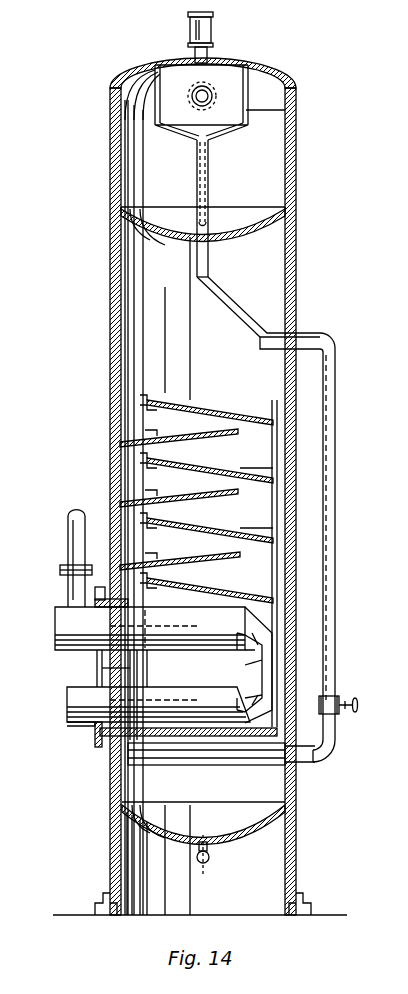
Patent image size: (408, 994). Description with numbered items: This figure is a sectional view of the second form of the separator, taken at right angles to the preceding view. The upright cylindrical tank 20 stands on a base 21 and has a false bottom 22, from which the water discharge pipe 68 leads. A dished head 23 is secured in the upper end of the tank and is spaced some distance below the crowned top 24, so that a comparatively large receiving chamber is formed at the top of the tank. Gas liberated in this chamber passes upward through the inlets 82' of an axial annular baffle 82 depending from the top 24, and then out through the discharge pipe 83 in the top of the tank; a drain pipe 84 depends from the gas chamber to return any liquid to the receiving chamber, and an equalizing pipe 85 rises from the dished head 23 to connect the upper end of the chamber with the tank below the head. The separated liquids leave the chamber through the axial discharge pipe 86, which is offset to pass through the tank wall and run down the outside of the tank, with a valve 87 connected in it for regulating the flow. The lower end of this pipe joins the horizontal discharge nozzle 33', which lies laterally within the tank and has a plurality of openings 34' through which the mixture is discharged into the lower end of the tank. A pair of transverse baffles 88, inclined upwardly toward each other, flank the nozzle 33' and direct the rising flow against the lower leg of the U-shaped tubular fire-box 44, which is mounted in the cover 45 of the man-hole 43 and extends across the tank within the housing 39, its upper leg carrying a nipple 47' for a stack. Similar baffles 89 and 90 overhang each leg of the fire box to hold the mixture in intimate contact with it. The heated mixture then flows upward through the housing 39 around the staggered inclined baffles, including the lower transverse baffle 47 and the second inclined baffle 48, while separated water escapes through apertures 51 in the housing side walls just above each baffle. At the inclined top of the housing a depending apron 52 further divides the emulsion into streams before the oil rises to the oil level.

The tank 20 is at (297, 246).
The base 21 is at (100, 893).
The false bottom 22 is at (248, 840).
The dished head 23 is at (167, 240).
The crowned top 24 is at (286, 72).
The discharge nozzle 33' is at (315, 770).
The openings 34' is at (206, 772).
The housing 39 is at (278, 508).
The man-hole 43 is at (100, 748).
The fire-box 44 is at (70, 723).
The cover 45 is at (100, 660).
The lower transverse baffle 47 is at (206, 583).
The nipple 47' is at (71, 558).
The second inclined baffle 48 is at (165, 560).
The apertures 51 is at (252, 466).
The apron 52 is at (150, 410).
The water discharge pipe 68 is at (210, 862).
The annular baffle 82 is at (206, 116).
The inlets 82' is at (214, 104).
The discharge pipe 83 is at (214, 30).
The drain pipe 84 is at (210, 186).
The equalizing pipe 85 is at (216, 215).
The discharge pipe 86 is at (226, 290).
The valve 87 is at (340, 697).
The transverse baffles 88 is at (118, 768).
The baffles 89 is at (148, 685).
The baffles 90 is at (263, 617).